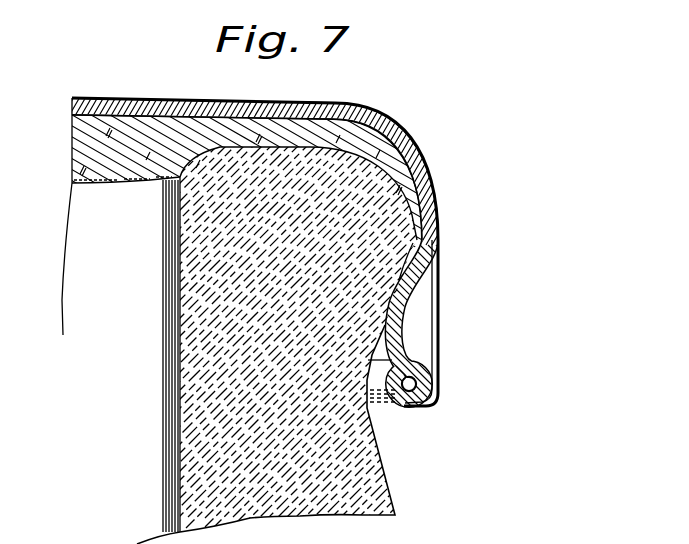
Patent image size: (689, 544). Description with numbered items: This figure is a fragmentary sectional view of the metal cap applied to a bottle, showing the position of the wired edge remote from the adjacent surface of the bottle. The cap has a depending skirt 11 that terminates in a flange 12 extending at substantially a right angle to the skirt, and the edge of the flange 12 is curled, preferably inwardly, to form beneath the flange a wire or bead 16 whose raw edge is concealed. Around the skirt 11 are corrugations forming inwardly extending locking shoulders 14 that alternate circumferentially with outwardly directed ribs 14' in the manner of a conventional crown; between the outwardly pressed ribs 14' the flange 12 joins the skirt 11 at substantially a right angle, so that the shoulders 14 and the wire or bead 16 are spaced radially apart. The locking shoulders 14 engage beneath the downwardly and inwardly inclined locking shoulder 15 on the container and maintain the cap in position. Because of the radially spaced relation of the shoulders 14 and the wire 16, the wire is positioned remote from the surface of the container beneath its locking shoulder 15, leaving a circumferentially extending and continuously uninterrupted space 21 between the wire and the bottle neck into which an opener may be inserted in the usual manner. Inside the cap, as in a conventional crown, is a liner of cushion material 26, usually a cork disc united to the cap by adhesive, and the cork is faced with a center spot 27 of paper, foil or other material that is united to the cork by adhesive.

The skirt 11 is at (439, 255).
The flange 12 is at (432, 386).
The locking shoulders 14 is at (344, 330).
The outwardly directed ribs 14' is at (446, 271).
The locking shoulder 15 is at (385, 308).
The wire or bead 16 is at (424, 407).
The space 21 is at (390, 410).
The liner of cushion material 26 is at (138, 125).
The center spot 27 is at (125, 186).